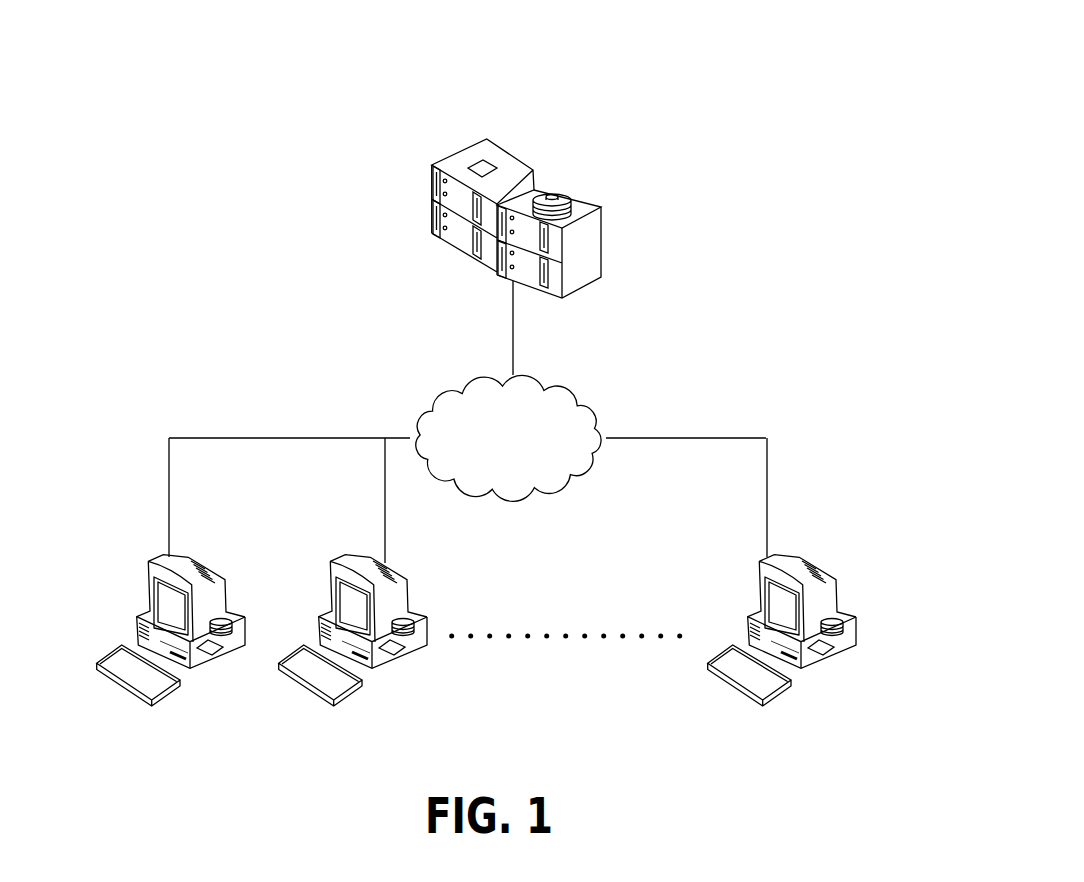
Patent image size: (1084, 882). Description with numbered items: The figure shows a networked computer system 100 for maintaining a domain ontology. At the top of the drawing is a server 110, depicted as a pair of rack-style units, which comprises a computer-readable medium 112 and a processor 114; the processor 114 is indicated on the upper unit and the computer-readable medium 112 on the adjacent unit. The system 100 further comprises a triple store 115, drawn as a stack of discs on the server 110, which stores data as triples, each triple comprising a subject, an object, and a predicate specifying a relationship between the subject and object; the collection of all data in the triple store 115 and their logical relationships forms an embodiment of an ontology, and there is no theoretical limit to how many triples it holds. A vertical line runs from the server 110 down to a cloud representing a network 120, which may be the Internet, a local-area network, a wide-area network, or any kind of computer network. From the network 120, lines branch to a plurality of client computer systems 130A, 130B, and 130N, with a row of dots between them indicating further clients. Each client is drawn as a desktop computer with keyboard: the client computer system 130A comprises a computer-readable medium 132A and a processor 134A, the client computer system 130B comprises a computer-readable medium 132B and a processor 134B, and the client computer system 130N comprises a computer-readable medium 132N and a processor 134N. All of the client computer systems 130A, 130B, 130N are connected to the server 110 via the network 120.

The networked computer system 100 is at (756, 138).
The server 110 is at (500, 192).
The computer-readable medium 112 is at (582, 222).
The processor 114 is at (476, 163).
The triple store 115 is at (552, 194).
The network 120 is at (563, 373).
The client computer system 130A is at (189, 655).
The client computer system 130B is at (376, 651).
The client computer system 130N is at (806, 651).
The computer-readable medium 132A is at (232, 615).
The computer-readable medium 132B is at (459, 605).
The computer-readable medium 132N is at (889, 605).
The processor 134A is at (220, 657).
The processor 134B is at (453, 670).
The processor 134N is at (883, 670).